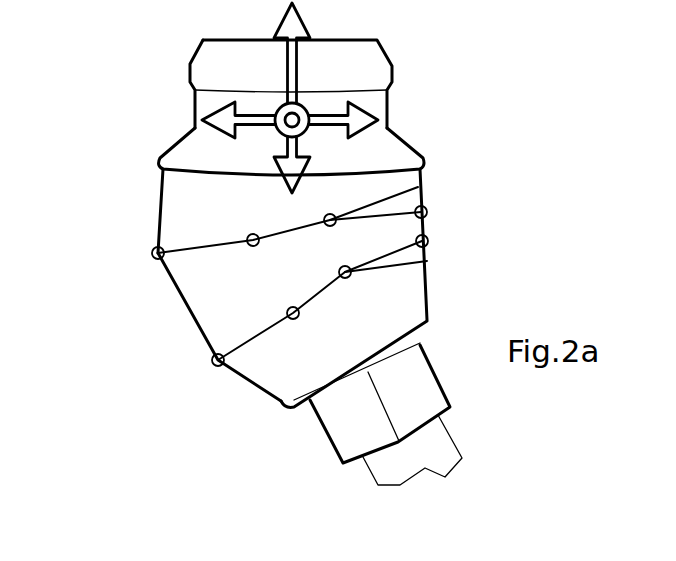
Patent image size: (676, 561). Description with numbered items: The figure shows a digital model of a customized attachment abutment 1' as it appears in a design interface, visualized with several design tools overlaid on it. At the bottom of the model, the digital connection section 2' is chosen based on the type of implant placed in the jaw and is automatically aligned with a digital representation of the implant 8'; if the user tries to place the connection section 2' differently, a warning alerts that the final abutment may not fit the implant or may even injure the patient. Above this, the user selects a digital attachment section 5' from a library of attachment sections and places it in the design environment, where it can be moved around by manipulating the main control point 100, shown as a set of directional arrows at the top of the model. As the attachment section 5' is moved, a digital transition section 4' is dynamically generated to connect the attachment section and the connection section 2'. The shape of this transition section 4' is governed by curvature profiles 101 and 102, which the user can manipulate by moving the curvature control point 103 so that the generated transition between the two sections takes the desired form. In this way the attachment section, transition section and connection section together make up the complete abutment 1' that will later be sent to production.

The customized attachment abutment 1' is at (389, 137).
The digital attachment section 5' is at (249, 78).
The main control point 100 is at (310, 127).
The curvature profile 101 is at (163, 192).
The curvature profile 102 is at (205, 247).
The curvature control point 103 is at (290, 311).
The digital transition section 4' is at (430, 257).
The digital connection section 2' is at (341, 413).
The digital representation of the implant 8' is at (444, 450).